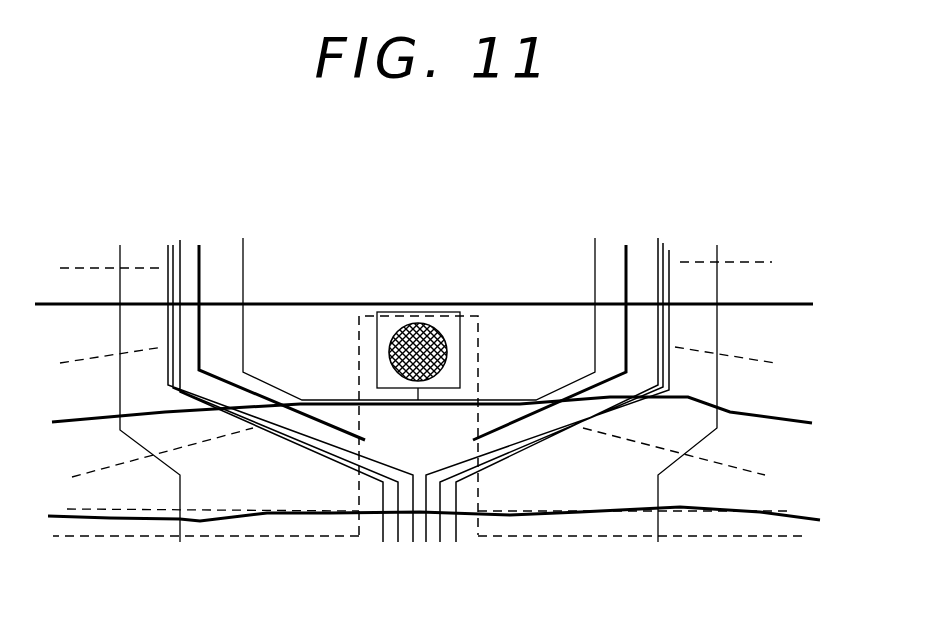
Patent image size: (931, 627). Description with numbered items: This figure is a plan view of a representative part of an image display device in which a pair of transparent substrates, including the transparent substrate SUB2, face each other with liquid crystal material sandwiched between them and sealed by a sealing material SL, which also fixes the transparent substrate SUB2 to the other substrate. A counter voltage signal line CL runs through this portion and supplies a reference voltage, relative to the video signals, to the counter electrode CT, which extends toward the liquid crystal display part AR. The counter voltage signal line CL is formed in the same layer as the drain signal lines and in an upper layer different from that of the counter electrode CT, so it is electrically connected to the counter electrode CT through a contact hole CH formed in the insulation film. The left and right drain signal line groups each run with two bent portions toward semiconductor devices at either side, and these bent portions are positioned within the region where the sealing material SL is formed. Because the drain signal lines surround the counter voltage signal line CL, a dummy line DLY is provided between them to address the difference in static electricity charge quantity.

The transparent substrate SUB2 is at (752, 305).
The sealing material SL is at (802, 423).
The counter voltage signal line CL is at (585, 261).
The contact hole CH is at (393, 352).
The dummy line DLY is at (626, 245).
The counter electrode CT is at (350, 570).
The liquid crystal display part AR is at (883, 467).